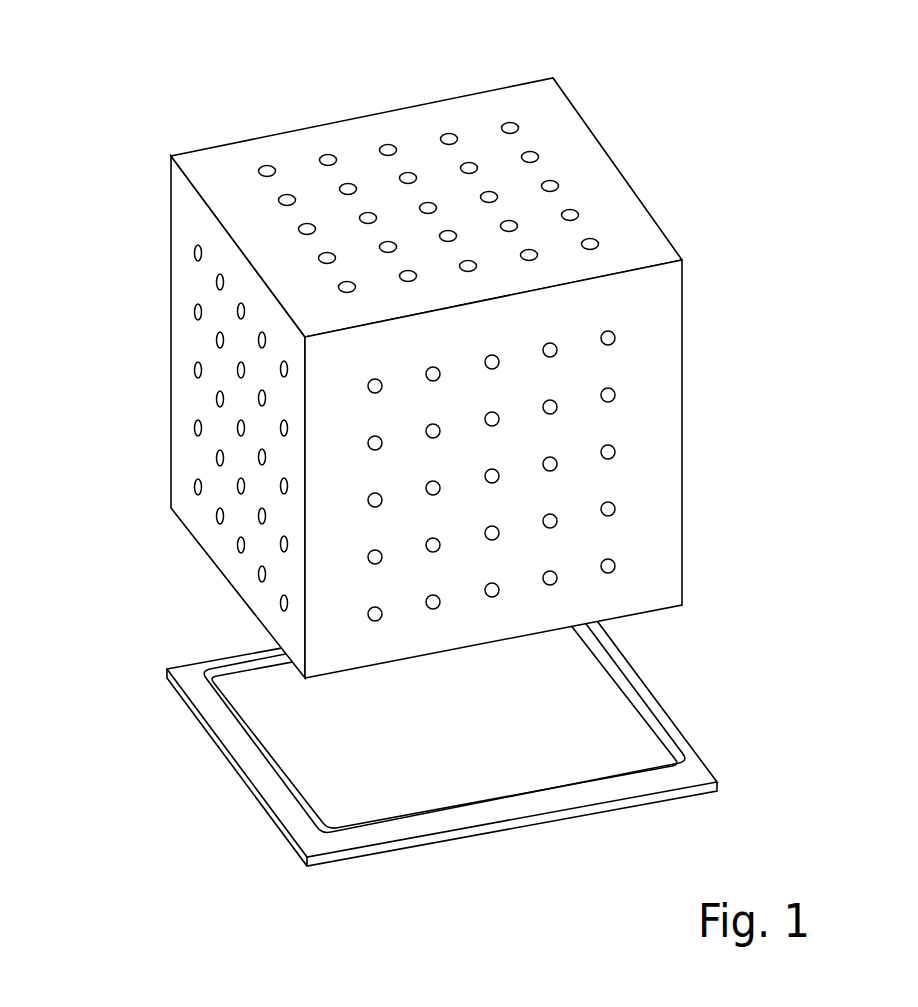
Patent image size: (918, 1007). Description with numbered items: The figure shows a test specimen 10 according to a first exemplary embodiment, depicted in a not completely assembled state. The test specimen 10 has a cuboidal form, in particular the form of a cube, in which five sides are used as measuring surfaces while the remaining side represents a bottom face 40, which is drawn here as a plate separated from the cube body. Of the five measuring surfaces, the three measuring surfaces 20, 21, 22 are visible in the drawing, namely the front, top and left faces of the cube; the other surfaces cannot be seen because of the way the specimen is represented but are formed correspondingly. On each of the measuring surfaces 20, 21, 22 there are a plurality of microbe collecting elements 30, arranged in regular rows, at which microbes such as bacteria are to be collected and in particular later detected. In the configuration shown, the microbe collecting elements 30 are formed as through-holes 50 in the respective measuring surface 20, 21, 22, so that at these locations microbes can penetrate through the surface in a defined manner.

The test specimen 10 is at (316, 93).
The measuring surface 20 is at (652, 502).
The measuring surface 21 is at (622, 222).
The measuring surface 22 is at (178, 205).
The microbe collecting element 30 is at (421, 347).
The through-hole 50 is at (516, 125).
The bottom face 40 is at (598, 712).